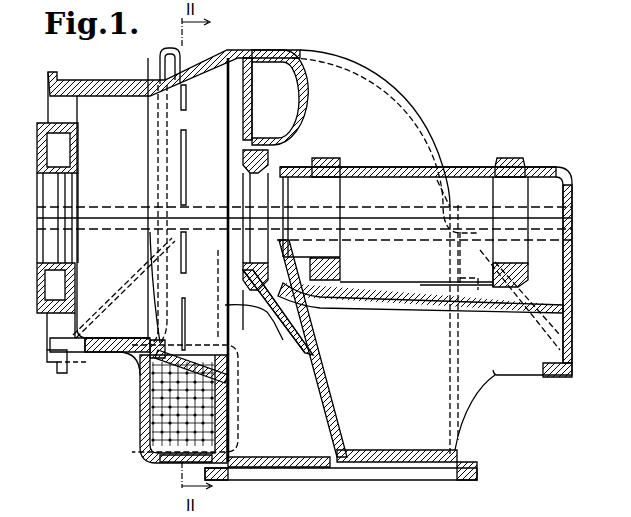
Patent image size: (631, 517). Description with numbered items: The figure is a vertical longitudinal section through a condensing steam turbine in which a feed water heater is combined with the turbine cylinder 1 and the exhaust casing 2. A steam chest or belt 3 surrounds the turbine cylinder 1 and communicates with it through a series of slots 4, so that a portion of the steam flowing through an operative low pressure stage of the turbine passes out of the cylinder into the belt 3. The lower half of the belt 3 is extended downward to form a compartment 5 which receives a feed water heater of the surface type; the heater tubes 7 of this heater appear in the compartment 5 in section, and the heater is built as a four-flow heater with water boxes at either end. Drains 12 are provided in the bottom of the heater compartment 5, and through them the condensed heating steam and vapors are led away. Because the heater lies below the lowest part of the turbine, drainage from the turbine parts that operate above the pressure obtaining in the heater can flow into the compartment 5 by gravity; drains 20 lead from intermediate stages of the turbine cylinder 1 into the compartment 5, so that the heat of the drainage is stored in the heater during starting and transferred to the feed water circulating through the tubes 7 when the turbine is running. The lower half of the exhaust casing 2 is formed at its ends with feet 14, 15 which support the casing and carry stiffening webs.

The turbine cylinder 1 is at (131, 90).
The exhaust casing 2 is at (370, 95).
The steam chest or belt 3 is at (177, 58).
The slots 4 is at (187, 94).
The compartment 5 is at (150, 423).
The heater tubes 7 is at (197, 407).
The drains 12 is at (182, 452).
The foot 14 is at (118, 323).
The foot 15 is at (497, 348).
The drains 20 is at (150, 352).